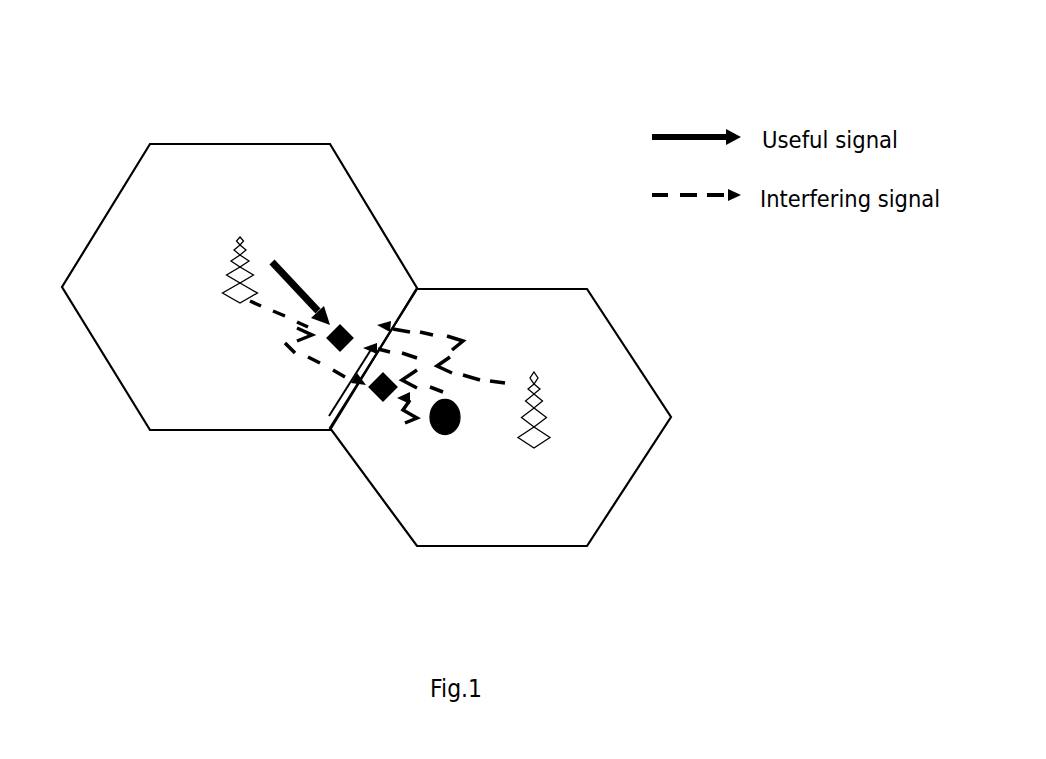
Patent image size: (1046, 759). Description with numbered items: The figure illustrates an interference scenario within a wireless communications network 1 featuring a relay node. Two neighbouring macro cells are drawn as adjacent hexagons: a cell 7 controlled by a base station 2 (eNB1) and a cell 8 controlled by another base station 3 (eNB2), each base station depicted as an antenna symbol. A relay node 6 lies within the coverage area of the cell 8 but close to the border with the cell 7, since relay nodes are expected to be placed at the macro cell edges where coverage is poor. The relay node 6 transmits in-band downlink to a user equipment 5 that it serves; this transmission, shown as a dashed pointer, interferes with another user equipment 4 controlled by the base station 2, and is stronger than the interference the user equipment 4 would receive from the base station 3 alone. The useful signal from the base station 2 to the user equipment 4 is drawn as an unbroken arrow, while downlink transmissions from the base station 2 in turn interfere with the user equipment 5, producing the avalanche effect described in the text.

The wireless communications network 1 is at (503, 55).
The base station 2 is at (220, 280).
The base station 3 is at (563, 432).
The user equipment 4 is at (350, 320).
The user equipment 5 is at (358, 405).
The relay node 6 is at (428, 453).
The cell 7 is at (201, 226).
The cell 8 is at (543, 346).